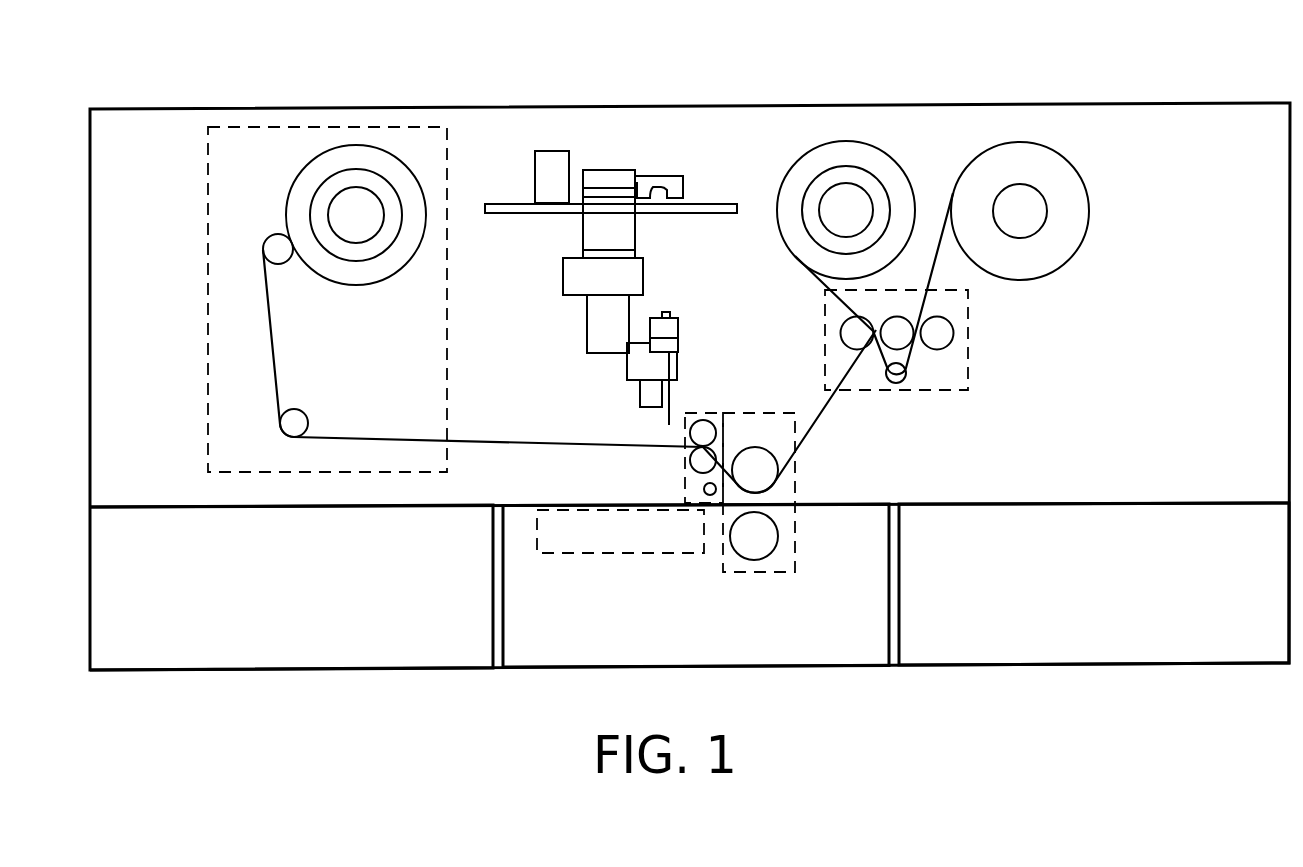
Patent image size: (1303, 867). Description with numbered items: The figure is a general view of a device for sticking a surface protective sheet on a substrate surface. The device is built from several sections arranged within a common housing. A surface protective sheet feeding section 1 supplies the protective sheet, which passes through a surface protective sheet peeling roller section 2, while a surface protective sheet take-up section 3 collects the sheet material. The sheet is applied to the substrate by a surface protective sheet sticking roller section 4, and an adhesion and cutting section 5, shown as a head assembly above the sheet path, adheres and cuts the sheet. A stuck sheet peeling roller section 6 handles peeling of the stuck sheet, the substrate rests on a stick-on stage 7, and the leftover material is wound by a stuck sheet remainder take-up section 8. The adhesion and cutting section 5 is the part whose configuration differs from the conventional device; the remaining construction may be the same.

The surface protective sheet feeding section 1 is at (843, 141).
The surface protective sheet peeling roller section 2 is at (968, 335).
The surface protective sheet take-up section 3 is at (1089, 207).
The surface protective sheet sticking roller section 4 is at (797, 473).
The adhesion and cutting section 5 is at (690, 346).
The stuck sheet peeling roller section 6 is at (685, 478).
The stick-on stage 7 is at (604, 553).
The stuck sheet remainder take-up section 8 is at (305, 127).